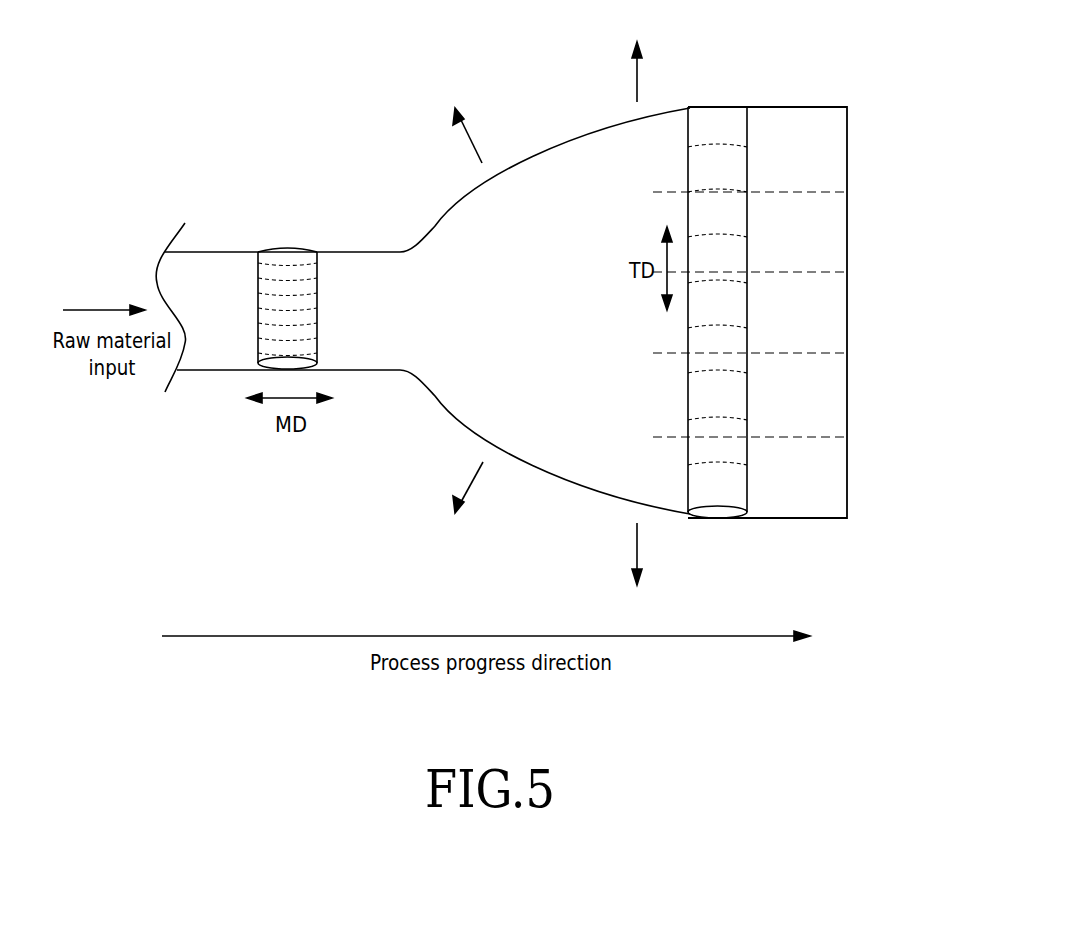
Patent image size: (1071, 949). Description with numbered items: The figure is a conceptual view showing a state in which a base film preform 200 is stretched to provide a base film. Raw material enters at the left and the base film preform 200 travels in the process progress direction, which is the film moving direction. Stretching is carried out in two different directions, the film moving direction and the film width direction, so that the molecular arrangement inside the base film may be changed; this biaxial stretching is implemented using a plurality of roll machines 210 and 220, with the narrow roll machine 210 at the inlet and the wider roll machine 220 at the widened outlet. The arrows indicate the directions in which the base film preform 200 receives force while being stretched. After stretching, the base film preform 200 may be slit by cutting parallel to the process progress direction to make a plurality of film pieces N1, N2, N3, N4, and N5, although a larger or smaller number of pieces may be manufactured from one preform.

The base film preform 200 is at (222, 277).
The roll machine 210 is at (290, 263).
The roll machine 220 is at (723, 125).
The film piece N1 is at (828, 484).
The film piece N2 is at (828, 402).
The film piece N3 is at (828, 322).
The film piece N4 is at (828, 239).
The film piece N5 is at (828, 152).